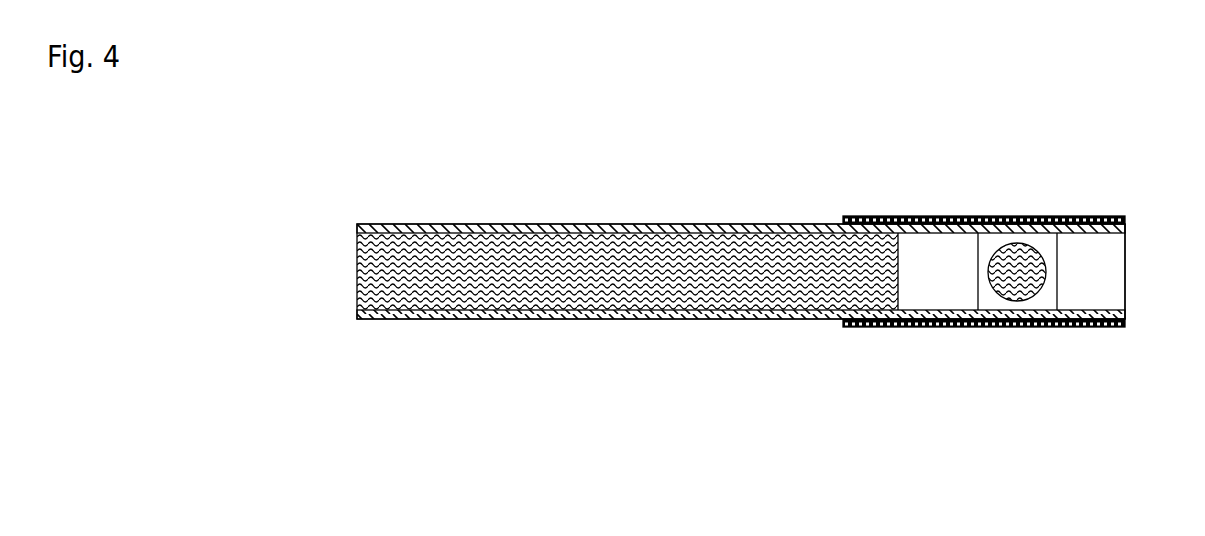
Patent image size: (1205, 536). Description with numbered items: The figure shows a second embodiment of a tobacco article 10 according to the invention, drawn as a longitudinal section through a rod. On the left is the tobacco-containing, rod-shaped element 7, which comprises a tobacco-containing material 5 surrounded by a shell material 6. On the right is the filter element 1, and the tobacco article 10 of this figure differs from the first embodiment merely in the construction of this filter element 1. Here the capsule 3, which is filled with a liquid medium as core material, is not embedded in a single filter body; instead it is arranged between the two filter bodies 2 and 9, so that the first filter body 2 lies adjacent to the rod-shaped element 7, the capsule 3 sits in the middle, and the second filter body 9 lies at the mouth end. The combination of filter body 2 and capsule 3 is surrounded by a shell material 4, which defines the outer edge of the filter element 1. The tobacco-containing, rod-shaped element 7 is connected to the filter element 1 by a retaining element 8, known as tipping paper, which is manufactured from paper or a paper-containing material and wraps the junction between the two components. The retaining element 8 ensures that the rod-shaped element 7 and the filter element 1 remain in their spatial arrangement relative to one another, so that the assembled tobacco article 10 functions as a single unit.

The filter element 1 is at (1033, 427).
The filter body 2 is at (943, 288).
The capsule 3 is at (1007, 285).
The shell material 4 is at (1038, 312).
The tobacco-containing material 5 is at (535, 265).
The shell material 6 is at (627, 227).
The tobacco-containing, rod-shaped element 7 is at (583, 132).
The retaining element 8 is at (1010, 220).
The filter body 9 is at (1102, 292).
The tobacco article 10 is at (320, 209).